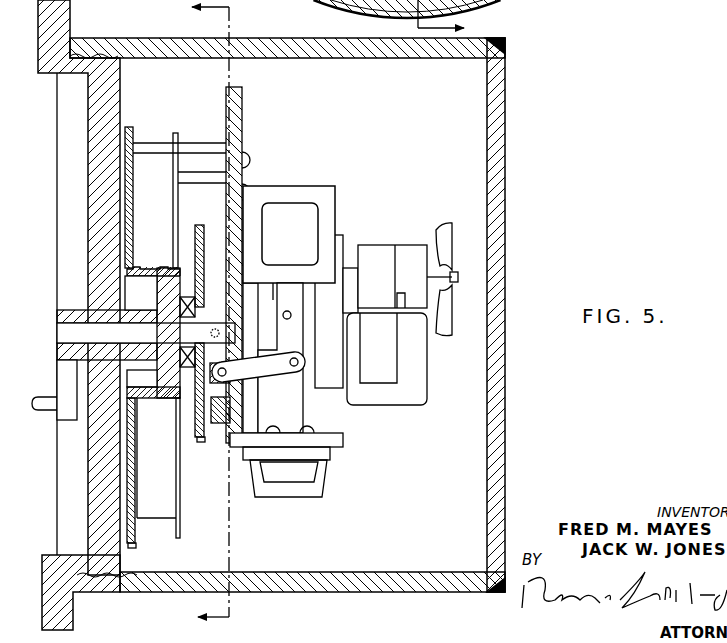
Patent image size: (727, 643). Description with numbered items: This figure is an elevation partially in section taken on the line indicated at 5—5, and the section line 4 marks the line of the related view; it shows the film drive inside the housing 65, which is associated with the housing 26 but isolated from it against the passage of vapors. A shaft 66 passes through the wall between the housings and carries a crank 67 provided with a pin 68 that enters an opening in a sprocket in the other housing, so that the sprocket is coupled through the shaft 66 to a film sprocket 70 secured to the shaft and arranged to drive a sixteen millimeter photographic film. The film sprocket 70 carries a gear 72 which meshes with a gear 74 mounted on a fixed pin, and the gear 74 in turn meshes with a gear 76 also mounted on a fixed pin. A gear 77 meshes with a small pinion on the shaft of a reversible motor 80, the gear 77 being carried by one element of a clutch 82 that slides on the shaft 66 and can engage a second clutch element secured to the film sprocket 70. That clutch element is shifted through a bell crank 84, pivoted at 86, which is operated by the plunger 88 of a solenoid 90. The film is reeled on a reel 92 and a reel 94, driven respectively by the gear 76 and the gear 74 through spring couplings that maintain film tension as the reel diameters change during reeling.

The section line 4- 4 is at (220, 315).
The section line 5- 5 is at (423, 20).
The housing 26 is at (42, 618).
The housing 65 is at (243, 572).
The shaft 66 is at (82, 310).
The crank 67 is at (58, 308).
The pin 68 is at (43, 408).
The film sprocket 70 is at (150, 268).
The gear 72 is at (123, 400).
The gear 74 is at (133, 544).
The gear 76 is at (130, 127).
The gear 77 is at (200, 442).
The reversible motor 80 is at (386, 245).
The clutch 82 is at (197, 298).
The bell crank 84 is at (262, 374).
The pivot 86 is at (284, 357).
The plunger 88 is at (303, 284).
The solenoid 90 is at (298, 186).
The reel 92 is at (177, 133).
The reel 94 is at (182, 528).